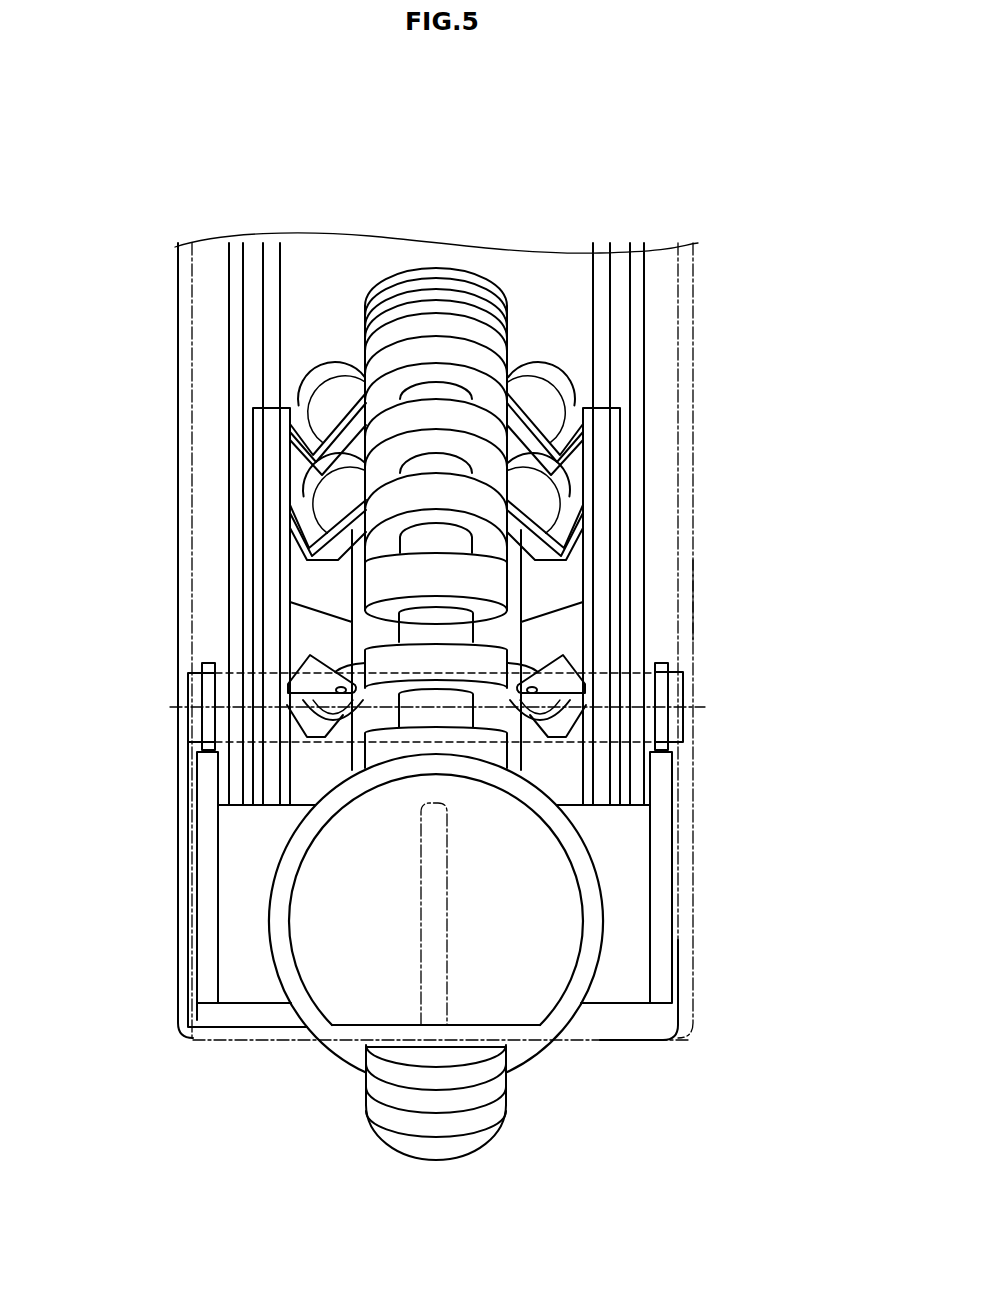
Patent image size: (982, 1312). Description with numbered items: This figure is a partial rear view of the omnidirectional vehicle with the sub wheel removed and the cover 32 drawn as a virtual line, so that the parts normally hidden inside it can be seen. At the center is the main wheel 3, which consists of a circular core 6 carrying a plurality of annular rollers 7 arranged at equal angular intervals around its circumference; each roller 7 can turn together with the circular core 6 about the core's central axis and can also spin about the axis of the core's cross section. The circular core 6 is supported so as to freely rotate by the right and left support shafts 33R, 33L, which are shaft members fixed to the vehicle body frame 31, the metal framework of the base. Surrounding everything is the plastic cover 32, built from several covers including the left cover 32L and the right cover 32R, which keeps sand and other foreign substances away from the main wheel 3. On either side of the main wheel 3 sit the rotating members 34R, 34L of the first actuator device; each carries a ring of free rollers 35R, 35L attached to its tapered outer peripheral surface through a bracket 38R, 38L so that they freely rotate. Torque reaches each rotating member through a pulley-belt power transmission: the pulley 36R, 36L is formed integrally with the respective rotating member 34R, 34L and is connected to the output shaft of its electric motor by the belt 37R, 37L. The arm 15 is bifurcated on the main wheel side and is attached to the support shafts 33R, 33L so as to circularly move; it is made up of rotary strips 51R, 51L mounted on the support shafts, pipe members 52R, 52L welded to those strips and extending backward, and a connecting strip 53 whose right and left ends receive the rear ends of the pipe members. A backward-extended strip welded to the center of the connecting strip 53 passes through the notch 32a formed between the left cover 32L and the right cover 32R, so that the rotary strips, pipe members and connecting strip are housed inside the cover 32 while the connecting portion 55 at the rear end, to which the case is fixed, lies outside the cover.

The main wheel 3 is at (491, 178).
The circular core 6 is at (445, 620).
The annular roller 7 is at (413, 328).
The arm 15 is at (704, 921).
The vehicle body frame 31 is at (233, 343).
The cover 32 is at (445, 641).
The left cover 32L is at (182, 590).
The right cover 32R is at (691, 590).
The notch 32a is at (430, 1000).
The left support shaft 33L is at (185, 719).
The right support shaft 33R is at (672, 722).
The left rotating member 34L is at (305, 580).
The right rotating member 34R is at (568, 580).
The left free rollers 35L is at (328, 367).
The right free rollers 35R is at (545, 367).
The left pulley 36L is at (257, 432).
The right pulley 36R is at (616, 432).
The left belt 37L is at (272, 337).
The right belt 37R is at (601, 337).
The left bracket 38L is at (300, 523).
The right bracket 38R is at (573, 523).
The left rotary strip 51L is at (208, 735).
The right rotary strip 51R is at (662, 737).
The left pipe member 52L is at (203, 850).
The right pipe member 52R is at (660, 842).
The connecting strip 53 is at (630, 995).
The connecting portion 55 is at (311, 1018).